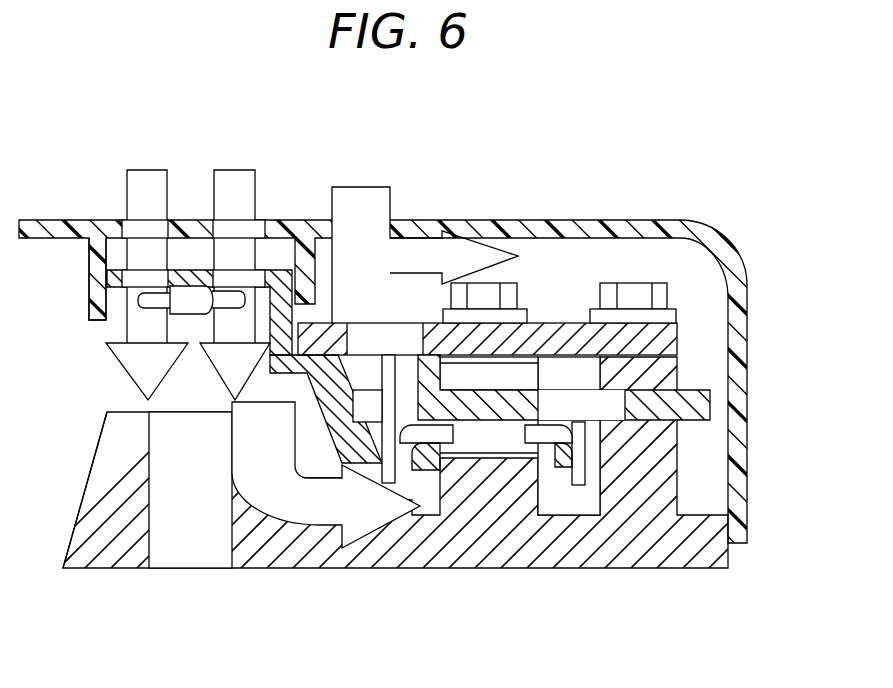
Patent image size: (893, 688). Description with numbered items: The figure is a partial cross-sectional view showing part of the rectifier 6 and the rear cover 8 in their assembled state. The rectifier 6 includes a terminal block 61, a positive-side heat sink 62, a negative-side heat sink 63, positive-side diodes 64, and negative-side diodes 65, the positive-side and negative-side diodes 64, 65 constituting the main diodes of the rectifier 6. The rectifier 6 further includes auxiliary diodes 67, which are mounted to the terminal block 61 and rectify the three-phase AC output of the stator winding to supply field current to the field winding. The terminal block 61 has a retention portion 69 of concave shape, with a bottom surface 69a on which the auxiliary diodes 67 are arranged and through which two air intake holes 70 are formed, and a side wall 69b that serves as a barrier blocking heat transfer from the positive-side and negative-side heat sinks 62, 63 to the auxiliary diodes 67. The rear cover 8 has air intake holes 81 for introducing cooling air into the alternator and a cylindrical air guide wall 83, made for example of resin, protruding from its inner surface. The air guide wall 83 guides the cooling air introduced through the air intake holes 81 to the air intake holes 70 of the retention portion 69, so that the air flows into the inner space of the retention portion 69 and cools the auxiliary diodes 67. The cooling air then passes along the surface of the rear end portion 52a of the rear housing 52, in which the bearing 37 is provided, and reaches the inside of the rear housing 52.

The rectifier 6 is at (562, 290).
The rear cover 8 is at (735, 350).
The bearing 37 is at (170, 458).
The rear housing 52 is at (470, 553).
The rear end portion 52a is at (117, 510).
The terminal block 61 is at (333, 425).
The positive-side heat sink 62 is at (695, 407).
The negative-side heat sink 63 is at (668, 337).
The positive-side diodes 64 is at (608, 408).
The negative-side diodes 65 is at (388, 332).
The auxiliary diodes 67 is at (200, 305).
The retention portion 69 is at (276, 268).
The bottom surface 69a is at (197, 276).
The side wall 69b is at (287, 313).
The air intake holes 70 is at (145, 278).
The air intake holes 81 is at (133, 223).
The air guide wall 83 is at (95, 297).